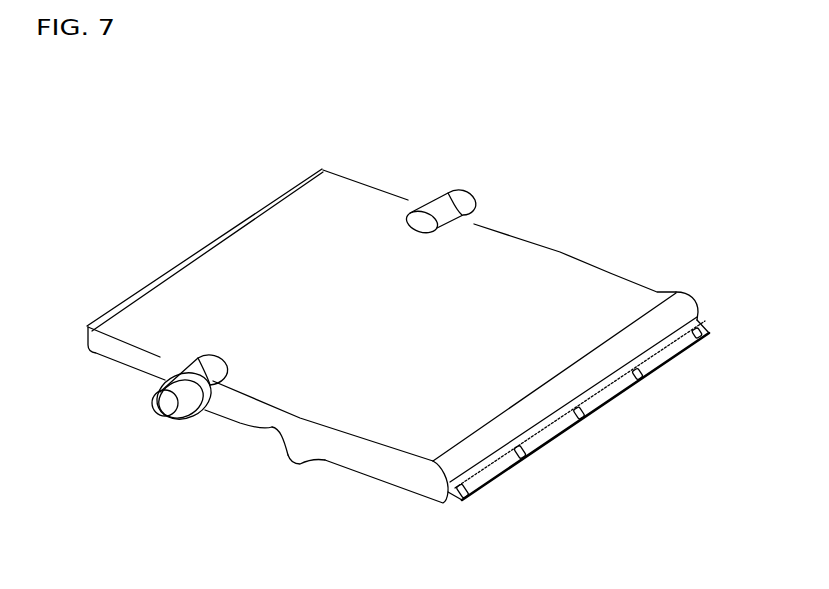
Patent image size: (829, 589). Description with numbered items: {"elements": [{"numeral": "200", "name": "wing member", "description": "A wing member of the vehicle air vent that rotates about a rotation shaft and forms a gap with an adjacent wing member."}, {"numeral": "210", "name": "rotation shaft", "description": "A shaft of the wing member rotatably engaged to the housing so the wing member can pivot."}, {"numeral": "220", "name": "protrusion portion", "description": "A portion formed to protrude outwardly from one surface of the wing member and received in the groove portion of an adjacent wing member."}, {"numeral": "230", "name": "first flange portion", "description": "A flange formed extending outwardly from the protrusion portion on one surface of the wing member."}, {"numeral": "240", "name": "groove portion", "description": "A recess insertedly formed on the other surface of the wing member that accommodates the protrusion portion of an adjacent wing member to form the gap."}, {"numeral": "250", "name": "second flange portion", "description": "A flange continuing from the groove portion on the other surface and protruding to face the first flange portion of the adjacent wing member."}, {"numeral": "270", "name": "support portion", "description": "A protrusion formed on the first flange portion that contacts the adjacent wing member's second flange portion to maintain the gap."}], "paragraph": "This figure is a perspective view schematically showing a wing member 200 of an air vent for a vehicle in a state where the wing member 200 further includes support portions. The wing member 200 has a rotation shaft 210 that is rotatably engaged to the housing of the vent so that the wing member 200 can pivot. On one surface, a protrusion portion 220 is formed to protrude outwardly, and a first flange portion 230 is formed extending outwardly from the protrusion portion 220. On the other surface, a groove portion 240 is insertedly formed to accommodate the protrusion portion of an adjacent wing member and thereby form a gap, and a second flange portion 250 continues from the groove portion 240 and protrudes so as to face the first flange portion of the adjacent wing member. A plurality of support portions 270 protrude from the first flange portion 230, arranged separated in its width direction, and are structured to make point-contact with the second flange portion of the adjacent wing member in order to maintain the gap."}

The battery module 200 is at (670, 102).
The hinge knob 210 is at (153, 414).
The side surface 220 is at (498, 432).
The edge strip 230 is at (670, 358).
The protrusion 240 is at (271, 430).
The recess 250 is at (294, 462).
The clip 270 is at (708, 327).